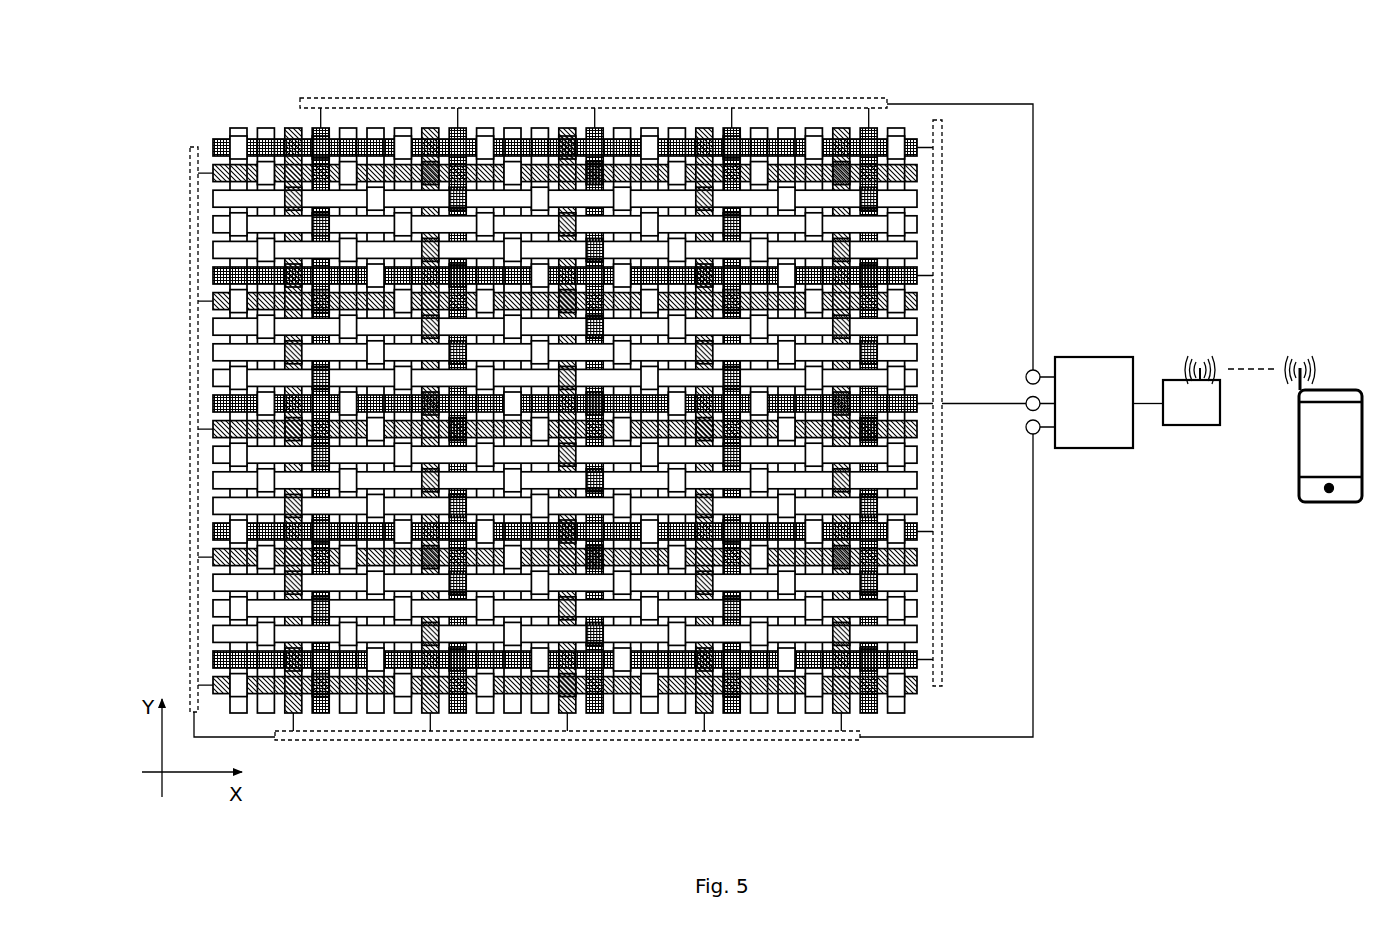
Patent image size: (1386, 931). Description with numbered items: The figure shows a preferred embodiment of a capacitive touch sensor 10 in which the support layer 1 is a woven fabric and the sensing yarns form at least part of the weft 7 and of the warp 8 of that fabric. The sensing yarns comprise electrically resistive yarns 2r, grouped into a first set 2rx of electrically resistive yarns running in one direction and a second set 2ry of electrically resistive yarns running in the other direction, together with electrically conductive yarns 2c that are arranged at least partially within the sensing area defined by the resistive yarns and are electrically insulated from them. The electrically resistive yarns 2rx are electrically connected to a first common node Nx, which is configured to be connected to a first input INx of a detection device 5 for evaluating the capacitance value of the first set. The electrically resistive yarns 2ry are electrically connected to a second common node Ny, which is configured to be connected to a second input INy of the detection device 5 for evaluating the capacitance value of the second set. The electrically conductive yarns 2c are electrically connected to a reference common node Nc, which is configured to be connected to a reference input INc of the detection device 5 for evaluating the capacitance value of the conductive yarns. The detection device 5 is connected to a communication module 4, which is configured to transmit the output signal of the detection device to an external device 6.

The capacitive touch sensor 10 is at (1148, 72).
The support layer 1 is at (212, 127).
The first set of electrically resistive yarns 2rx is at (212, 276).
The weft 7 is at (212, 352).
The reference common node Nc is at (190, 588).
The warp 8 is at (483, 715).
The second set of electrically resistive yarns 2ry is at (594, 715).
The electrically conductive yarns 2c is at (698, 694).
The electrically resistive yarns 2r is at (877, 665).
The second common node Ny is at (758, 98).
The first common node Nx is at (940, 190).
The second input INy is at (1035, 368).
The first input INx is at (1026, 413).
The reference input INc is at (1034, 436).
The detection device 5 is at (1123, 452).
The communication module 4 is at (1196, 428).
The external device 6 is at (1326, 504).